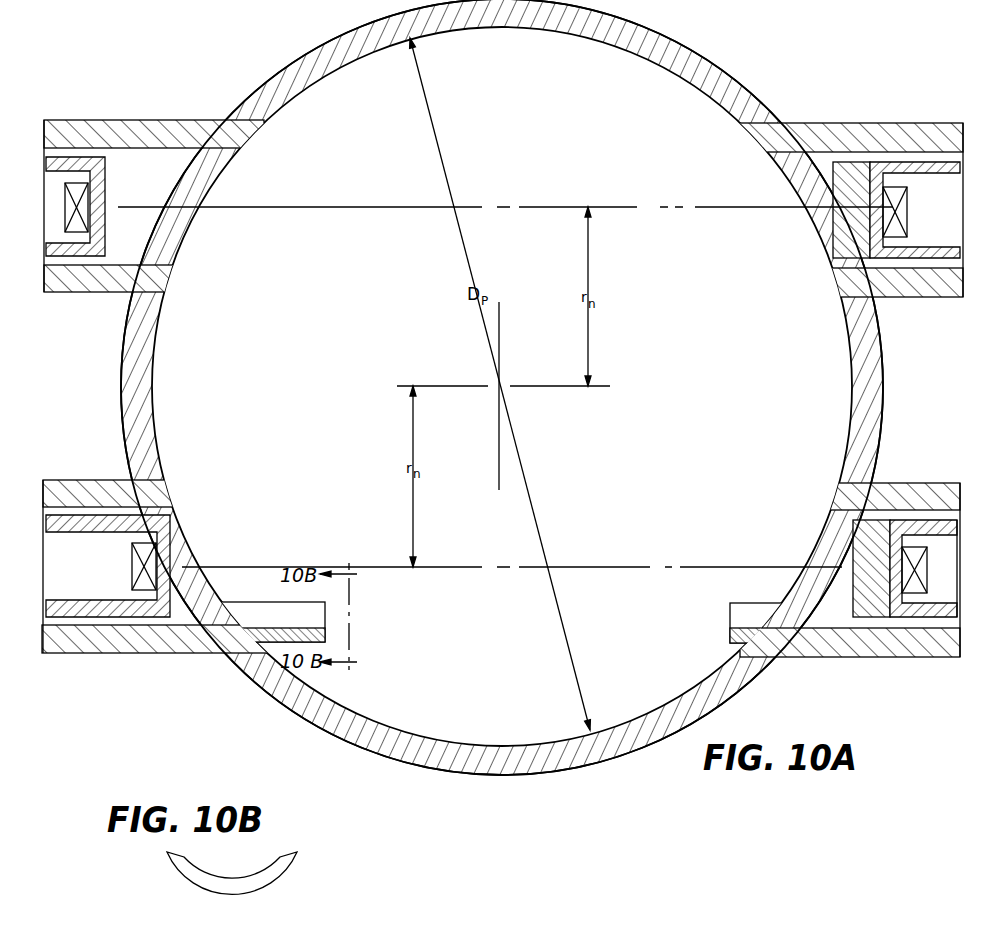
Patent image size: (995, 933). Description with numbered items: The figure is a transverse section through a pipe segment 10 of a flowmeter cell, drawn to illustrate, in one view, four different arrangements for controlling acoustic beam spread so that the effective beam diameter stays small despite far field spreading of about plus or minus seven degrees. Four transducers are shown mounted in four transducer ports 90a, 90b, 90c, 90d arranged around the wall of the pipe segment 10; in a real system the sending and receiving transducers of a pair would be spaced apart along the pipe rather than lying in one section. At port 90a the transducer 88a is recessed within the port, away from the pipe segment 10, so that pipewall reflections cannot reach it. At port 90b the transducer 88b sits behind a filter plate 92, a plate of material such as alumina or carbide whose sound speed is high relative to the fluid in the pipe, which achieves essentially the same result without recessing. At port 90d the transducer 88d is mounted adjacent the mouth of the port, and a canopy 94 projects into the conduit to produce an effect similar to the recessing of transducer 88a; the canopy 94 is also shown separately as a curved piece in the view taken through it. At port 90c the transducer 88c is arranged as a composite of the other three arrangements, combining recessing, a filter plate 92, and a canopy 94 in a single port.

In FIG. 10A, the pipe segment 10 is at (582, 773).
In FIG. 10A, the transducer 88a is at (87, 202).
In FIG. 10A, the transducer 88b is at (905, 217).
In FIG. 10A, the transducer 88c is at (913, 552).
In FIG. 10A, the transducer 88d is at (132, 567).
In FIG. 10A, the transducer port 90a is at (152, 121).
In FIG. 10A, the transducer port 90b is at (832, 123).
In FIG. 10A, the transducer port 90c is at (887, 654).
In FIG. 10A, the transducer port 90d is at (197, 654).
In FIG. 10A, the filter plate 92 is at (833, 243).
In FIG. 10A, the canopy 94 is at (258, 603).
In FIG. 10B, the canopy 94 is at (195, 878).